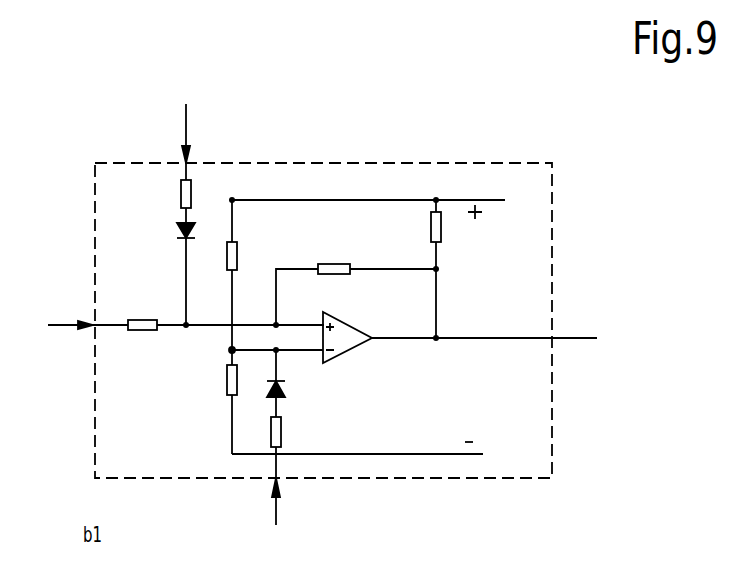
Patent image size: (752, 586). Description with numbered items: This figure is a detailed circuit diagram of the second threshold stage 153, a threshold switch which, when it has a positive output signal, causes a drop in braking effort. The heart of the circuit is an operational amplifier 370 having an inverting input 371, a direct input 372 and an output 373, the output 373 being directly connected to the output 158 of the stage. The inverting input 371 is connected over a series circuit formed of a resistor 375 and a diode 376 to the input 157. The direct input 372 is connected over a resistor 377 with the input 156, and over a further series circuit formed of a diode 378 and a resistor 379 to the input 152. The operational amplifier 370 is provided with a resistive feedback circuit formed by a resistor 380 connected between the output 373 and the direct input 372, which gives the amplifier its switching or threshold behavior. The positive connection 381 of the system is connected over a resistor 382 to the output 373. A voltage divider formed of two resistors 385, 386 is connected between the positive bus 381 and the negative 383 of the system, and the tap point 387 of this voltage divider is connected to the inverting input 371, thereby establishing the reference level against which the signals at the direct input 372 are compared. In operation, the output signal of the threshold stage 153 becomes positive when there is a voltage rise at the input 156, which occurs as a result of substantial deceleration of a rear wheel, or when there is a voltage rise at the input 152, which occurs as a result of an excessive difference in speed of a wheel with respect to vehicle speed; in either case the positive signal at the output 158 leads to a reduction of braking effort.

The input 152 is at (187, 162).
The second threshold stage 153 is at (95, 478).
The input 156 is at (92, 327).
The input 157 is at (273, 478).
The output 158 is at (552, 338).
The operational amplifier 370 is at (355, 347).
The inverting input 371 is at (323, 351).
The direct input 372 is at (323, 324).
The output 373 is at (372, 337).
The resistor 375 is at (281, 431).
The diode 376 is at (283, 391).
The resistor 377 is at (140, 329).
The diode 378 is at (180, 234).
The resistor 379 is at (180, 193).
The resistor 380 is at (335, 265).
The positive connection 381 is at (333, 200).
The resistor 382 is at (438, 230).
The negative 383 is at (368, 454).
The resistor 385 is at (236, 254).
The resistor 386 is at (232, 378).
The tap point 387 is at (231, 350).